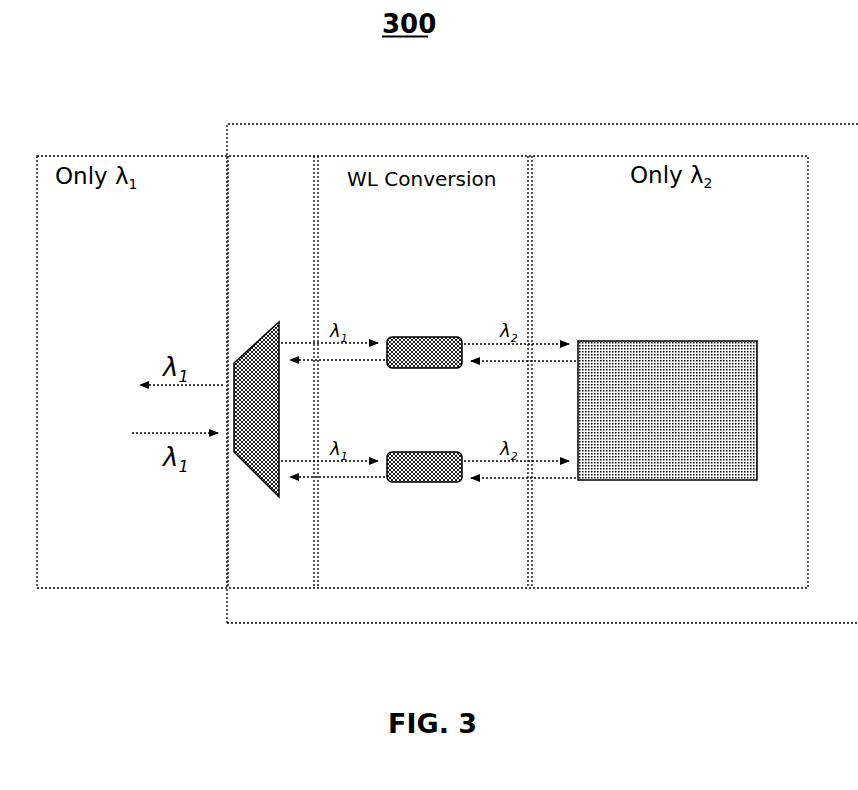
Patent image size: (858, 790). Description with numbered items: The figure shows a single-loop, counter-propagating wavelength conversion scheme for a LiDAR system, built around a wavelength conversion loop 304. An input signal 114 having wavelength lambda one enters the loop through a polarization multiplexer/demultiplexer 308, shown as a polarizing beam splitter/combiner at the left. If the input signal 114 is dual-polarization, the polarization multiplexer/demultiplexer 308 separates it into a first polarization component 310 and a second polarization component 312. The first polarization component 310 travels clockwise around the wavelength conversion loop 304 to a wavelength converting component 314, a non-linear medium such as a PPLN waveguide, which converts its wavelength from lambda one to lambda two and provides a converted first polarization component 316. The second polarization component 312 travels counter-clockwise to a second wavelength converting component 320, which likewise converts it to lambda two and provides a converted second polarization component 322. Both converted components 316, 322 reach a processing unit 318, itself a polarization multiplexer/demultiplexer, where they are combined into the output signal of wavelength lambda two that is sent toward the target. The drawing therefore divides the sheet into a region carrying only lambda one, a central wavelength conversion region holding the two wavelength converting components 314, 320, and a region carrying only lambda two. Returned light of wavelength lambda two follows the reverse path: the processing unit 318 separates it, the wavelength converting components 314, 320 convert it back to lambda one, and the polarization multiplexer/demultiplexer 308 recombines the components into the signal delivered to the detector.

The wavelength conversion loop 304 is at (736, 107).
The input signal 114 is at (139, 441).
The polarization multiplexer/demultiplexer 308 is at (237, 352).
The first polarization component 310 is at (290, 338).
The second polarization component 312 is at (296, 452).
The wavelength converting component 314 is at (447, 337).
The converted first polarization component 316 is at (477, 338).
The processing unit 318 is at (667, 485).
The wavelength converting component 320 is at (445, 497).
The converted second polarization component 322 is at (477, 460).